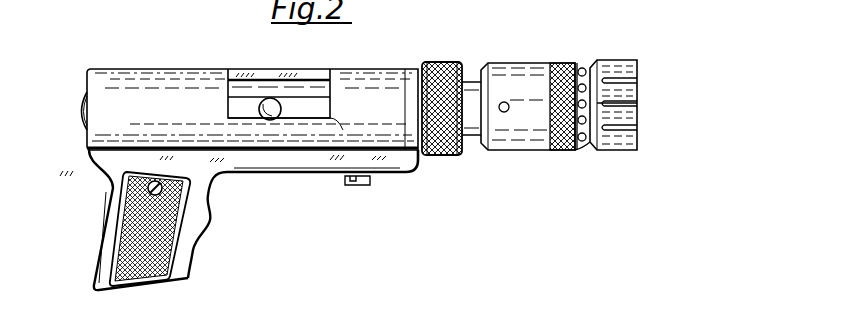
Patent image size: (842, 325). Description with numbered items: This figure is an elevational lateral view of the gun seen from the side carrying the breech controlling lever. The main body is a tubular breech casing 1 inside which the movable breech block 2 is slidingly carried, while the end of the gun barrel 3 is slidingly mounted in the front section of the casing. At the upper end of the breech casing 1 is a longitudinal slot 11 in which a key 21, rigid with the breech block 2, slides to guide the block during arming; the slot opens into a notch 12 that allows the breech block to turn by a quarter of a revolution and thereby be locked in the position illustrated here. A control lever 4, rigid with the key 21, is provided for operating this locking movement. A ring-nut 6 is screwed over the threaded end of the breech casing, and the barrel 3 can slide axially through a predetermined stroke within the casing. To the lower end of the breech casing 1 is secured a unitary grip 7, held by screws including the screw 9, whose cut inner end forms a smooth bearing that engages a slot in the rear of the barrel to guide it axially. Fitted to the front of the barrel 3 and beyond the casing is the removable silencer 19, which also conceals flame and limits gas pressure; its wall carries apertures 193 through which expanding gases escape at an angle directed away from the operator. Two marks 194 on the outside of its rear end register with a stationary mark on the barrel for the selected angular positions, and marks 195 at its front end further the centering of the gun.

The breech casing 1 is at (146, 90).
The movable breech block 2 is at (83, 101).
The longitudinal slot 11 is at (252, 76).
The control lever 4 is at (288, 97).
The key 21 is at (252, 118).
The grip 7 is at (306, 165).
The notch 12 is at (335, 120).
The screw 9 is at (348, 186).
The ring-nut 6 is at (431, 155).
The gun barrel 3 is at (475, 123).
The marks 194 is at (482, 68).
The silencer 19 is at (600, 76).
The marks 195 is at (637, 103).
The apertures 193 is at (587, 141).